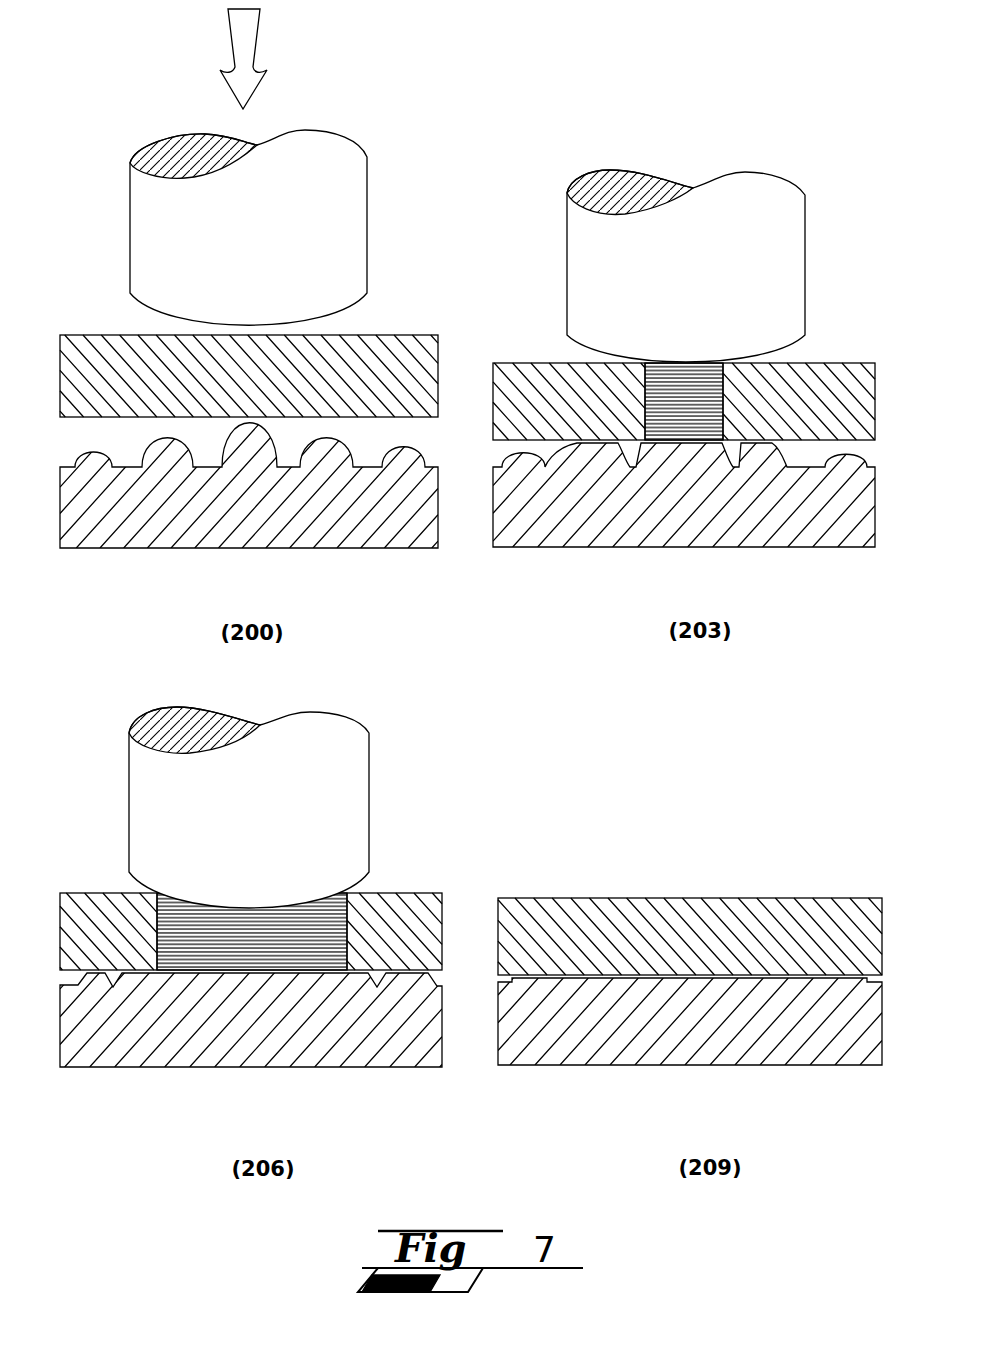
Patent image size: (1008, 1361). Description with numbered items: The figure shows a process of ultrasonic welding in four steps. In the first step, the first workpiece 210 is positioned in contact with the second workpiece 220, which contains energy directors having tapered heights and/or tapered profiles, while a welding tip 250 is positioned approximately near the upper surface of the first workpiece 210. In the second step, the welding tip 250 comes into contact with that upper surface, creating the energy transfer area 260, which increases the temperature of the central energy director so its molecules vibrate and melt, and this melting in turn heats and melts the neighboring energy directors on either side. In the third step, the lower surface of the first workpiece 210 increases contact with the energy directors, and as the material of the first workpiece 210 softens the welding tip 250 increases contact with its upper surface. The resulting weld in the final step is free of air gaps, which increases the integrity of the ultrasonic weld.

The first workpiece 210 is at (394, 334).
The second workpiece 220 is at (400, 549).
The welding tip 250 is at (313, 133).
The energy transfer area 260 is at (727, 411).